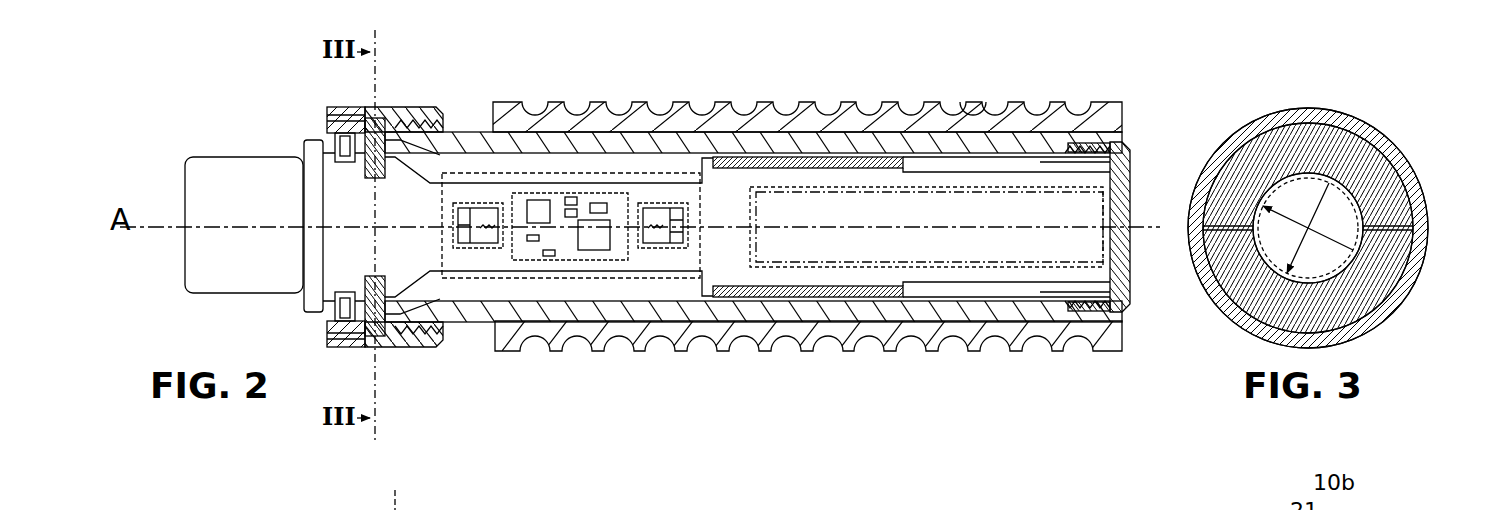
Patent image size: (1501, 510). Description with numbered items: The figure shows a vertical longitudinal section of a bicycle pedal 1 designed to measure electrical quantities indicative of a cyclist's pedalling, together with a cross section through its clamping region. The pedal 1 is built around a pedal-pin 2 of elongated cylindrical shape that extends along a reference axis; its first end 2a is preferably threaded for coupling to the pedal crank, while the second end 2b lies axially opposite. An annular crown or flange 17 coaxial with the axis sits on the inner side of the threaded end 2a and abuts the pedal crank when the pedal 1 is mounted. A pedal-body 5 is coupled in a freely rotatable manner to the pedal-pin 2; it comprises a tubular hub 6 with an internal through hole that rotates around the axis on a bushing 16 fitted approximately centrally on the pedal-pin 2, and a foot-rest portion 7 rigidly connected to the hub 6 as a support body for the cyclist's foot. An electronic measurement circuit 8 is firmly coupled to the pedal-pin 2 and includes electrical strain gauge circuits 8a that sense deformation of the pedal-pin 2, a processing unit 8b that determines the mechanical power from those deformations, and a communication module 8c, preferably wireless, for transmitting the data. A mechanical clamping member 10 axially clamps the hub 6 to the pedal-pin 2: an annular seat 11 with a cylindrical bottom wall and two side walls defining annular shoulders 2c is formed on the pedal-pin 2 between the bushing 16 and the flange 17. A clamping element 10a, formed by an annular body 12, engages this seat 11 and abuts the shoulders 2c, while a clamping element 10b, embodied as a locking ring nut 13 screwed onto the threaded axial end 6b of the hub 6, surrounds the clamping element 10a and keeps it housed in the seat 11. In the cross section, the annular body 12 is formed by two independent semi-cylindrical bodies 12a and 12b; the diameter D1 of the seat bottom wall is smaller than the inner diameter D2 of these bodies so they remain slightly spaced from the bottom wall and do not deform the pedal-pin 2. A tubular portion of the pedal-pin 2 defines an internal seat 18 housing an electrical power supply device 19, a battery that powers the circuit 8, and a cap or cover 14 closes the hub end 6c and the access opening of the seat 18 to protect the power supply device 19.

In FIG. 2, the pedal 1 is at (154, 307).
In FIG. 2, the pedal-pin 2 is at (738, 204).
In FIG. 2, the first end 2a is at (237, 156).
In FIG. 2, the second end 2b is at (1108, 165).
In FIG. 2, the annular shoulders 2c is at (375, 147).
In FIG. 2, the pedal-body 5 is at (1122, 98).
In FIG. 2, the hub 6 is at (870, 140).
In FIG. 2, the axial end of the hub 6b is at (439, 112).
In FIG. 2, the end of the hub 6c is at (1124, 139).
In FIG. 2, the foot-rest portion 7 is at (973, 100).
In FIG. 2, the electronic measurement circuit 8 is at (571, 241).
In FIG. 2, the electrical strain gauge circuits 8a is at (478, 250).
In FIG. 2, the processing unit 8b is at (539, 234).
In FIG. 2, the communication module 8c is at (598, 257).
In FIG. 2, the mechanical clamping member 10 is at (361, 235).
In FIG. 2, the clamping element 10a is at (404, 331).
In FIG. 3, the clamping element 10a is at (1396, 287).
In FIG. 2, the clamping element 10b is at (362, 356).
In FIG. 2, the annular seat 11 is at (363, 170).
In FIG. 3, the annular seat 11 is at (1359, 202).
In FIG. 2, the annular body 12 is at (386, 335).
In FIG. 3, the annular body 12 is at (1387, 165).
In FIG. 3, the semi-cylindrical body 12a is at (1323, 148).
In FIG. 3, the semi-cylindrical body 12b is at (1234, 280).
In FIG. 2, the locking ring nut 13 is at (324, 340).
In FIG. 3, the locking ring nut 13 is at (1358, 110).
In FIG. 2, the cap or cover 14 is at (1131, 290).
In FIG. 2, the bushing 16 is at (790, 157).
In FIG. 2, the annular crown or flange 17 is at (297, 303).
In FIG. 2, the internal compartment or seat 18 is at (950, 256).
In FIG. 2, the electrical power supply device 19 is at (857, 240).
In FIG. 3, the diameter of the cylindrical bottom wall of the annular seat D1 is at (1306, 244).
In FIG. 3, the diameter of the inner semi-circular wall of the semi-cylindrical bodies D2 is at (1292, 206).